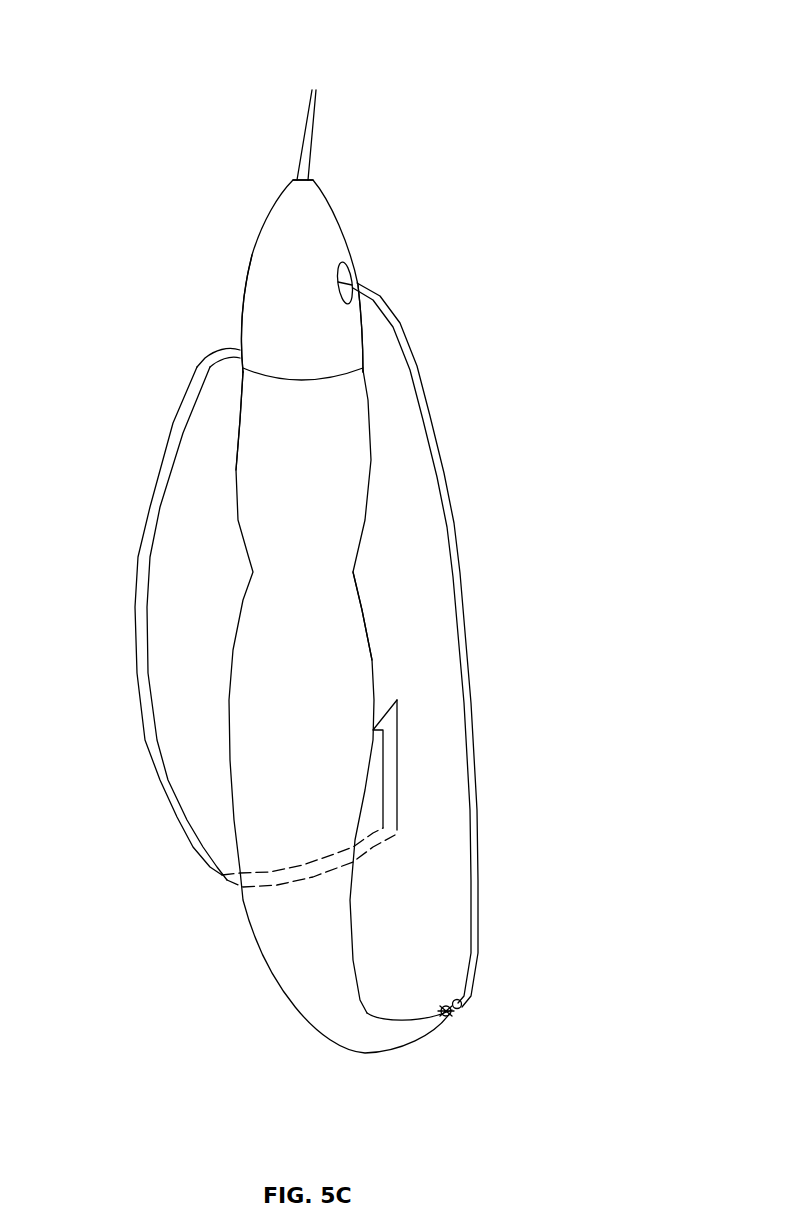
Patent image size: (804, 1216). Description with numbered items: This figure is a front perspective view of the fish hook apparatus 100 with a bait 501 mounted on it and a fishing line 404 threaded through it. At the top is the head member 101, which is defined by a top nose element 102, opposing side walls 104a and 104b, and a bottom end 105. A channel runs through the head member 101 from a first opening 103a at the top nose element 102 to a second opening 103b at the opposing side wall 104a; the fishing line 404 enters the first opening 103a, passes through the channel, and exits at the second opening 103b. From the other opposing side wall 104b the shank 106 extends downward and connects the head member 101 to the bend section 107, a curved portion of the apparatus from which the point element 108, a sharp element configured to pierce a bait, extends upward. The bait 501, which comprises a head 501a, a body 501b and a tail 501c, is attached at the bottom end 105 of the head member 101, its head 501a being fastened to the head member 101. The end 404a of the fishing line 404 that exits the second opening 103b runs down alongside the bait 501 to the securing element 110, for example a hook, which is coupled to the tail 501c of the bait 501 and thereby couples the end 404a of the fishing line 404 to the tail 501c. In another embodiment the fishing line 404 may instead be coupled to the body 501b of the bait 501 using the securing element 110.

The fish hook apparatus 100 is at (403, 60).
The head member 101 is at (361, 213).
The top nose element 102 is at (272, 197).
The first opening 103a is at (312, 178).
The second opening 103b is at (357, 270).
The opposing side wall 104a is at (353, 325).
The opposing side wall 104b is at (242, 310).
The bottom end 105 is at (257, 373).
The shank 106 is at (137, 535).
The bend section 107 is at (218, 877).
The point element 108 is at (397, 727).
The securing element 110 is at (456, 1014).
The fishing line 404 is at (457, 553).
The end of the fishing line 404a is at (465, 996).
The bait 501 is at (372, 518).
The head 501a is at (240, 383).
The body 501b is at (358, 597).
The tail 501c is at (420, 1018).